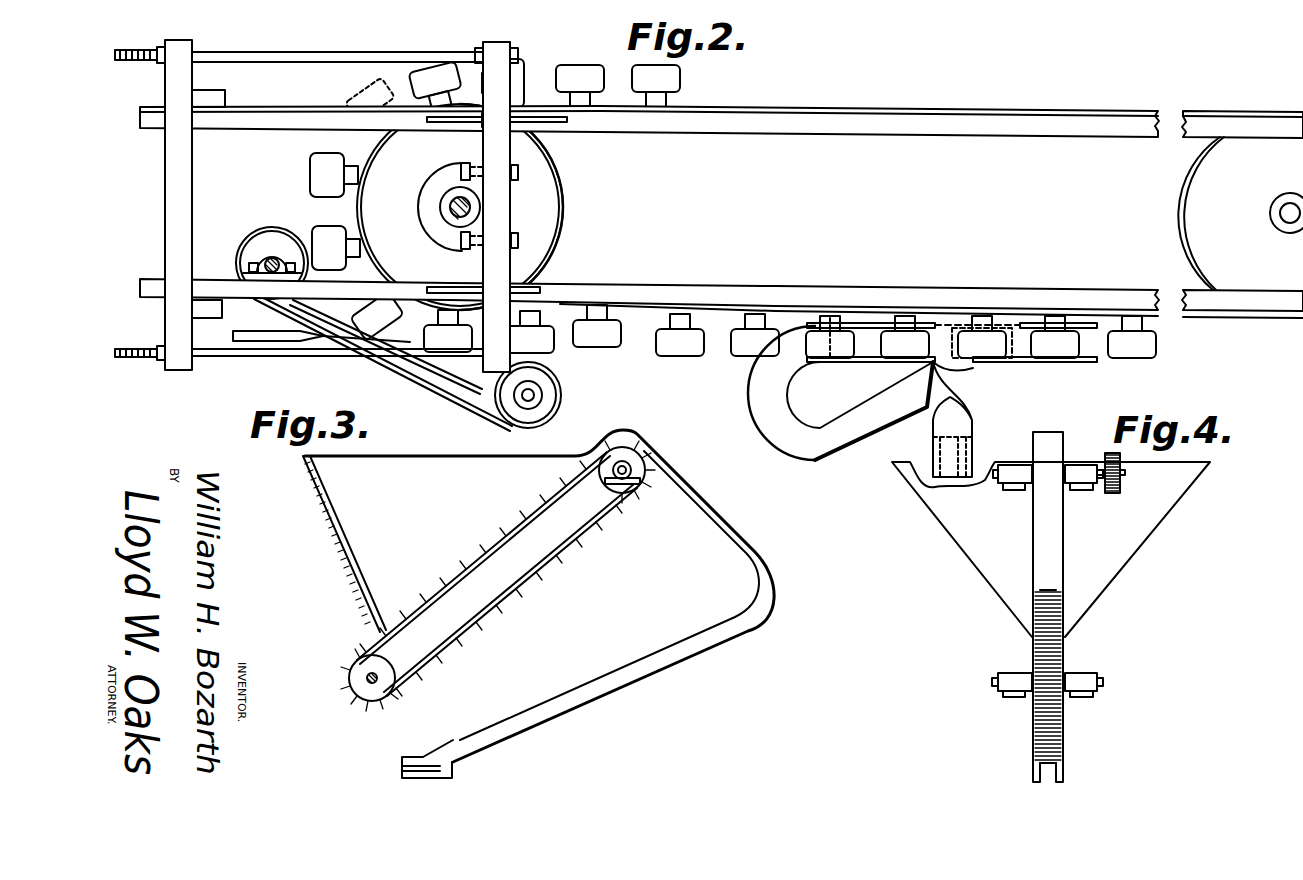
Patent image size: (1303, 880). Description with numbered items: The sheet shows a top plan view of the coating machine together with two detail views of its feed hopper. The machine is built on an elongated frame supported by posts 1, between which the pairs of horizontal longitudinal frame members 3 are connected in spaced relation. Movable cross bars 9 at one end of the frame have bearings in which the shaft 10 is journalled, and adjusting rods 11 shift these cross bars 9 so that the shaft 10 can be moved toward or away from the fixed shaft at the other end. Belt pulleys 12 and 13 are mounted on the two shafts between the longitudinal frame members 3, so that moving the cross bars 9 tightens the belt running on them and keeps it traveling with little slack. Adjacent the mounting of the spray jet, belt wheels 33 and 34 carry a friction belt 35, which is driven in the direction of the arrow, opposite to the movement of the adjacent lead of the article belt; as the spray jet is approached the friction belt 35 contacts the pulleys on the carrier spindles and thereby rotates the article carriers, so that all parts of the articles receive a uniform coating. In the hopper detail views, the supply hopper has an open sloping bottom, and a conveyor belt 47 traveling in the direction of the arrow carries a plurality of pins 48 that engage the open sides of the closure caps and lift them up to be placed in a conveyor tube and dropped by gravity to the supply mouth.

In FIG. 2, the post 1 is at (184, 99).
In FIG. 2, the longitudinal frame member 3 is at (718, 120).
In FIG. 2, the movable cross bar 9 is at (500, 197).
In FIG. 2, the shaft 10 is at (449, 207).
In FIG. 2, the adjusting rod 11 is at (240, 358).
In FIG. 2, the belt pulley 12 is at (1197, 213).
In FIG. 2, the belt pulley 13 is at (537, 248).
In FIG. 2, the belt wheel 33 is at (251, 248).
In FIG. 2, the belt wheel 34 is at (555, 360).
In FIG. 2, the friction belt 35 is at (371, 376).
In FIG. 3, the conveyor belt 47 is at (598, 526).
In FIG. 3, the pin 48 is at (545, 569).